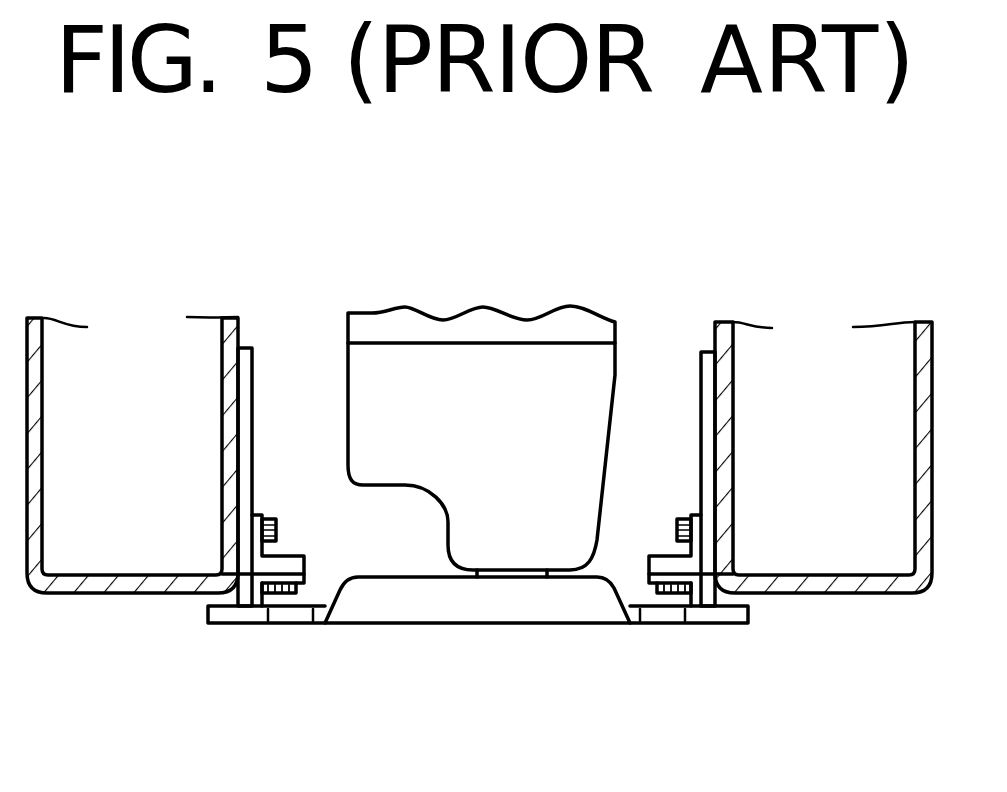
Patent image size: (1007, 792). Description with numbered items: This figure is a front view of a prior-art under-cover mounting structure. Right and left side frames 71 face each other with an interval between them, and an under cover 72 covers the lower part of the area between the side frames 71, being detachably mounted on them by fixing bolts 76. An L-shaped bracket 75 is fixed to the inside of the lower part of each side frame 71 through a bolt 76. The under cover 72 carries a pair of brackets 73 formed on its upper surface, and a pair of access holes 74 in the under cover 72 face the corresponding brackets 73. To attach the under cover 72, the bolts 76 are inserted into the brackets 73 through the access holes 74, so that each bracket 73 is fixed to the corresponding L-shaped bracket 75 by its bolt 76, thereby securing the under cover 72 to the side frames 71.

The side frame 71 is at (128, 594).
The under cover 72 is at (470, 624).
The bracket 73 is at (306, 573).
The access hole 74 is at (295, 624).
The L-shaped bracket 75 is at (292, 557).
The bolt 76 is at (278, 520).